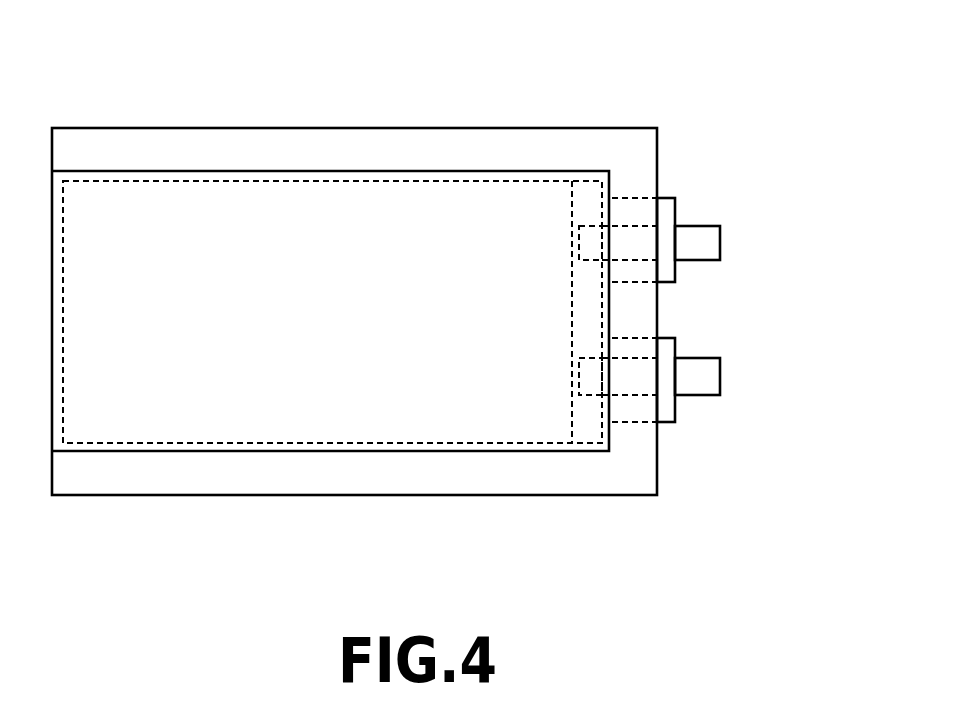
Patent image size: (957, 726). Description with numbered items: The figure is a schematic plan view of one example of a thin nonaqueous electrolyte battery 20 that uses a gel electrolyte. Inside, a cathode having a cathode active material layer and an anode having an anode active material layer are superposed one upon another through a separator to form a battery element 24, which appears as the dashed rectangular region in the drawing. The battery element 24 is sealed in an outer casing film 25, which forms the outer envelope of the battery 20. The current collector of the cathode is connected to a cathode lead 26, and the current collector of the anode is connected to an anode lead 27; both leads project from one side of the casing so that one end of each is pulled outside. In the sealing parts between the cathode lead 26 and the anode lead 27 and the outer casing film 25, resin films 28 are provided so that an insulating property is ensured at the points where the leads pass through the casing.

The nonaqueous electrolyte battery 20 is at (324, 118).
The battery element 24 is at (290, 420).
The outer casing film 25 is at (482, 494).
The cathode lead 26 is at (710, 241).
The anode lead 27 is at (710, 378).
The resin films 28 is at (676, 272).